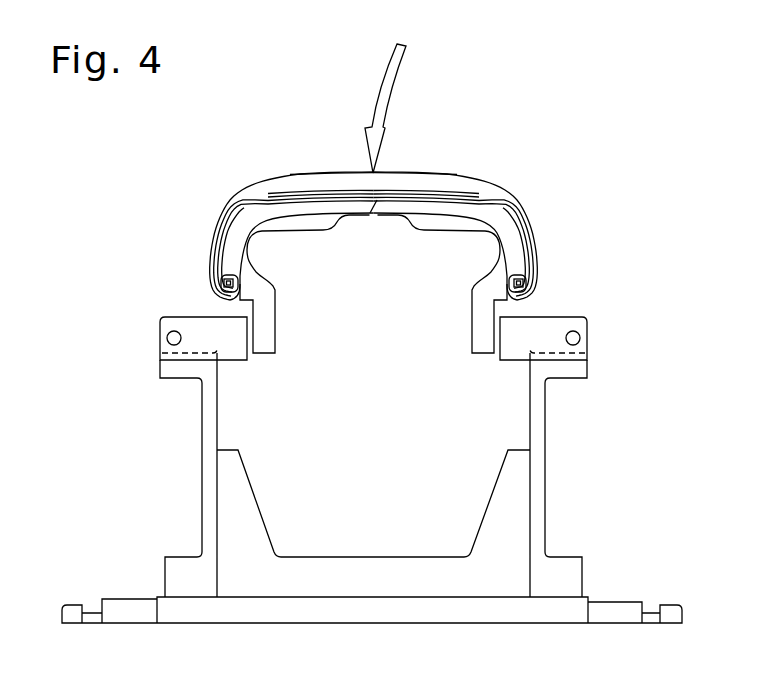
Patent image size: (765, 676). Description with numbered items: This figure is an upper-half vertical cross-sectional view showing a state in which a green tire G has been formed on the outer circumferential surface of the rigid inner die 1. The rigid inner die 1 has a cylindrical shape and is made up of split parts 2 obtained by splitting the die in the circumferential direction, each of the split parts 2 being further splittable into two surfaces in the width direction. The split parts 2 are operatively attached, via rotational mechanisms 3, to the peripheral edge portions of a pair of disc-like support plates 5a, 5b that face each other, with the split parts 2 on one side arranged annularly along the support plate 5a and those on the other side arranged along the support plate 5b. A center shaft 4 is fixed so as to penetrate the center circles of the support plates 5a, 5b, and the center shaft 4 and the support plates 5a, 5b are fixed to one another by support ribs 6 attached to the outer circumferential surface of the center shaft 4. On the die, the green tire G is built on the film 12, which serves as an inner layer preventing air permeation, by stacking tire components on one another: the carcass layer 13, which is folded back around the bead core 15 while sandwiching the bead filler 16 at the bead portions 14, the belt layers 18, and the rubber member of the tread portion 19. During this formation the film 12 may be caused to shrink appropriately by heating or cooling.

The rigid inner die 1 is at (364, 186).
The split parts 2 is at (293, 212).
The rotational mechanisms 3 is at (168, 339).
The center shaft 4 is at (602, 610).
The support plate 5a is at (207, 475).
The support plate 5b is at (540, 472).
The support ribs 6 is at (233, 560).
The film 12 is at (505, 188).
The carcass layer 13 is at (457, 188).
The bead portions 14 is at (220, 289).
The bead core 15 is at (220, 285).
The bead filler 16 is at (215, 268).
The belt layers 18 is at (303, 180).
The tread portion 19 is at (344, 155).
The green tire G is at (435, 147).